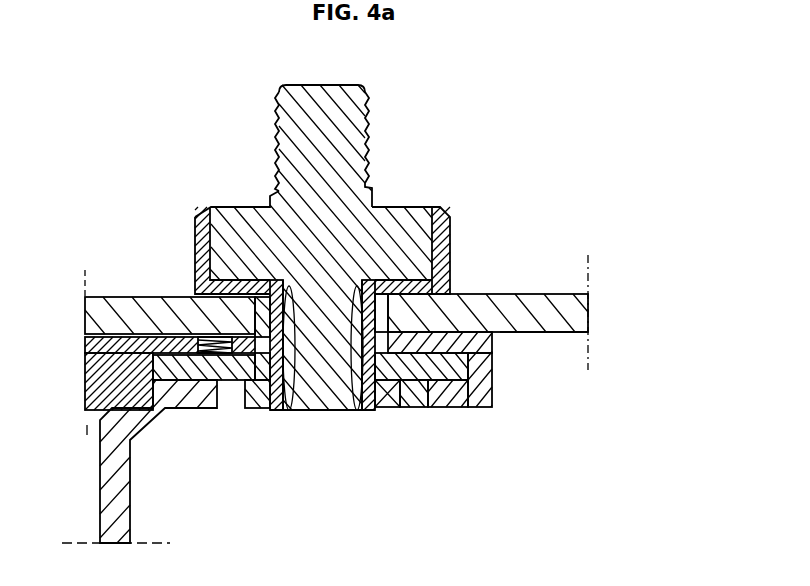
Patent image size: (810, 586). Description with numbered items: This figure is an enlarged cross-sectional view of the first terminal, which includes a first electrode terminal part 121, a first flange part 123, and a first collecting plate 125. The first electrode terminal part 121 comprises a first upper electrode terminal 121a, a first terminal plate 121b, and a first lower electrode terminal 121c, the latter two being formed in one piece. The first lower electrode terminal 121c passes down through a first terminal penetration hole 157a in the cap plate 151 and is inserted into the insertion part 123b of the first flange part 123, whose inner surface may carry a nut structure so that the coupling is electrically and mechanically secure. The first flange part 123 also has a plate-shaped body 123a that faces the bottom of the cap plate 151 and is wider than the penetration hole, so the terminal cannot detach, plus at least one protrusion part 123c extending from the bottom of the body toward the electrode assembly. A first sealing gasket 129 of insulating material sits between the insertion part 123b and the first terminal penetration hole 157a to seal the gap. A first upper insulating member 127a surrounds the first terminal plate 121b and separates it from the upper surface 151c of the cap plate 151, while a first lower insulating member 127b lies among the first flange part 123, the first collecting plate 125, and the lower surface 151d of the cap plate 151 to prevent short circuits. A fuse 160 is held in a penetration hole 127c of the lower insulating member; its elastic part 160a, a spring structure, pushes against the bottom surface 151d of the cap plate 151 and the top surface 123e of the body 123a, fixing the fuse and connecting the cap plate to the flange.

The first electrode terminal part 121 is at (260, 190).
The first upper electrode terminal 121a is at (313, 87).
The first terminal plate 121b is at (398, 216).
The first lower electrode terminal 121c is at (323, 412).
The first flange part 123 is at (309, 406).
The body 123a is at (503, 413).
The insertion part 123b is at (277, 412).
The protrusion part 123c is at (230, 412).
The top surface of the body 123e is at (90, 368).
The first collecting plate 125 is at (110, 490).
The first upper insulating member 127a is at (443, 210).
The first lower insulating member 127b is at (90, 396).
The penetration hole 127c is at (90, 343).
The first sealing gasket 129 is at (393, 262).
The cap plate 151 is at (88, 312).
The upper surface of the cap plate 151c is at (570, 294).
The lower surface of the cap plate 151d is at (553, 333).
The first terminal penetration hole 157a is at (390, 313).
The fuse 160 is at (203, 322).
The elastic part 160a is at (190, 296).